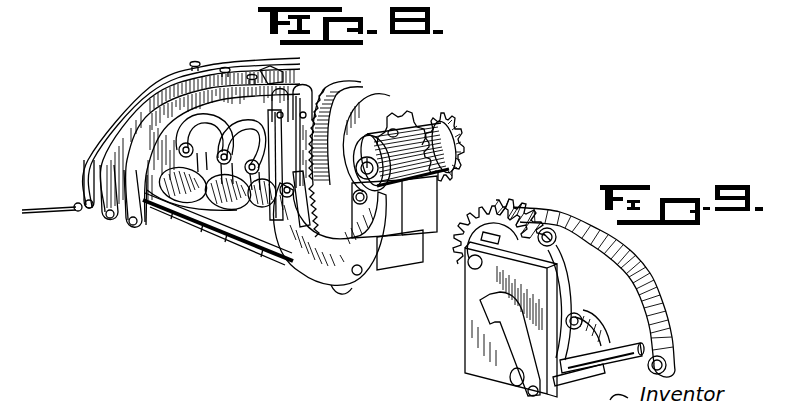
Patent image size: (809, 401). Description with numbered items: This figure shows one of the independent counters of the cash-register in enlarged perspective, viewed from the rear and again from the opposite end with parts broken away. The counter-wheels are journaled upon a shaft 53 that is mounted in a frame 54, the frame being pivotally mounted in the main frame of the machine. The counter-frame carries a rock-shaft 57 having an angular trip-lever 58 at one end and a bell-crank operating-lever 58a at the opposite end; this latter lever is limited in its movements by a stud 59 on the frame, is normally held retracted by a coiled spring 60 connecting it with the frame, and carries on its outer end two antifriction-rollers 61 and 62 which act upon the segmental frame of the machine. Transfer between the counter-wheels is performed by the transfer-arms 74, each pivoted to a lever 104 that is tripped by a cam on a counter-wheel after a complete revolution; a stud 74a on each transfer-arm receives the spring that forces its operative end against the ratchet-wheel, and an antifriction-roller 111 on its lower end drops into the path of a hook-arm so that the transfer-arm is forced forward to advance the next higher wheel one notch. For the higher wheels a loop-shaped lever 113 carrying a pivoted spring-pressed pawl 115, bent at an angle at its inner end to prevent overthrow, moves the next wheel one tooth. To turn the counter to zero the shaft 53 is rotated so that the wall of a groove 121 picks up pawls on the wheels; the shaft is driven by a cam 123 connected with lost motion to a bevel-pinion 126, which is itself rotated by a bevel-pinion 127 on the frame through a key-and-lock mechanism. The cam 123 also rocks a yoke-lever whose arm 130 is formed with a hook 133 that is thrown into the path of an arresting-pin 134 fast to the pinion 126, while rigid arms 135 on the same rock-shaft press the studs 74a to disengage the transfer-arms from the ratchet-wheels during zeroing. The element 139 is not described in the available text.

In FIG. 8, the transfer-arm 74 is at (153, 88).
In FIG. 9, the transfer-arm 74 is at (597, 292).
In FIG. 8, the lever 104 is at (138, 128).
In FIG. 8, the antifriction-roller 111 is at (52, 203).
In FIG. 9, the antifriction-roller 111 is at (668, 365).
In FIG. 8, the loop-shaped lever 113 is at (265, 72).
In FIG. 8, the pawl 115 is at (301, 85).
In FIG. 8, the arm 130 is at (350, 115).
In FIG. 8, the shaft 53 is at (355, 112).
In FIG. 9, the shaft 53 is at (527, 205).
In FIG. 8, the hook 133 is at (389, 119).
In FIG. 8, the cam 123 is at (393, 128).
In FIG. 8, the bevel-pinion 126 is at (430, 122).
In FIG. 8, the bevel-pinion 127 is at (450, 126).
In FIG. 8, the arresting-pin 134 is at (470, 128).
In FIG. 8, the stud 59 is at (367, 197).
In FIG. 8, the frame 54 is at (400, 250).
In FIG. 9, the frame 54 is at (478, 310).
In FIG. 8, the antifriction-roller 61 is at (300, 230).
In FIG. 8, the coiled spring 60 is at (330, 234).
In FIG. 8, the bell-crank operating-lever 58a is at (343, 295).
In FIG. 8, the antifriction-roller 62 is at (222, 232).
In FIG. 8, the rock-shaft 57 is at (262, 262).
In FIG. 9, the rock-shaft 57 is at (602, 373).
In FIG. 8, the rigid arm 135 is at (211, 228).
In FIG. 9, the rigid arm 135 is at (592, 331).
In FIG. 8, the shell 139 is at (255, 207).
In FIG. 8, the stud 74a is at (183, 221).
In FIG. 9, the stud 74a is at (574, 320).
In FIG. 9, the groove 121 is at (468, 264).
In FIG. 9, the angular trip-lever 58 is at (518, 347).